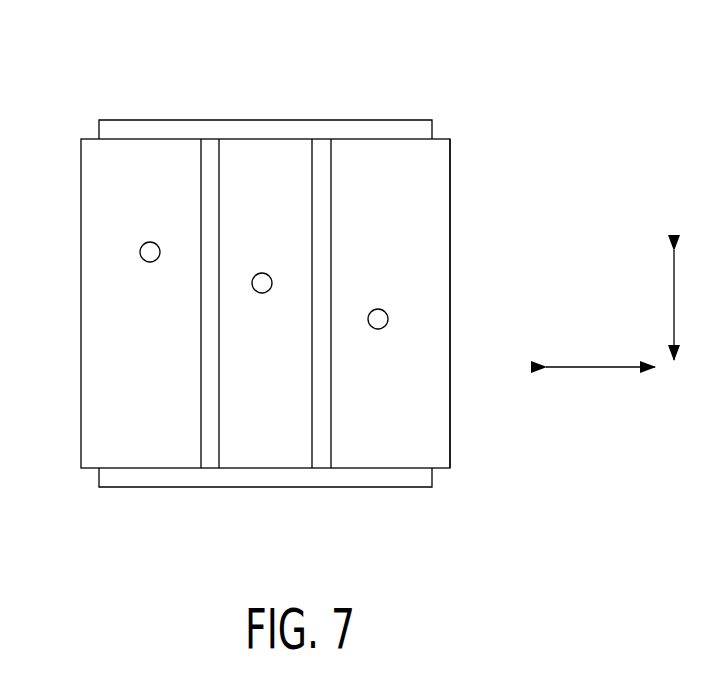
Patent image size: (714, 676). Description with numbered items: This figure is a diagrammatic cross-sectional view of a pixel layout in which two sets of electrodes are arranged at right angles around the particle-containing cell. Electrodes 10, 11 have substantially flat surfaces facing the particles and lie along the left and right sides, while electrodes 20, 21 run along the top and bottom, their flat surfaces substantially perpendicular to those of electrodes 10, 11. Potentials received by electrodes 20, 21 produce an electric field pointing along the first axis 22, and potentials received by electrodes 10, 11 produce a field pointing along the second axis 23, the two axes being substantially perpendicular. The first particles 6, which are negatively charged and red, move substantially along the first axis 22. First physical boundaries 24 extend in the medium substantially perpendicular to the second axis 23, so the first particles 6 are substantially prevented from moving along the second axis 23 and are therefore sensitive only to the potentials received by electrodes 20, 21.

The first particles 6 is at (380, 318).
The electrode 10 is at (91, 280).
The electrode 11 is at (440, 234).
The electrode 20 is at (260, 131).
The electrode 21 is at (268, 488).
The first axis 22 is at (660, 305).
The second axis 23 is at (600, 354).
The first physical boundaries 24 is at (209, 148).